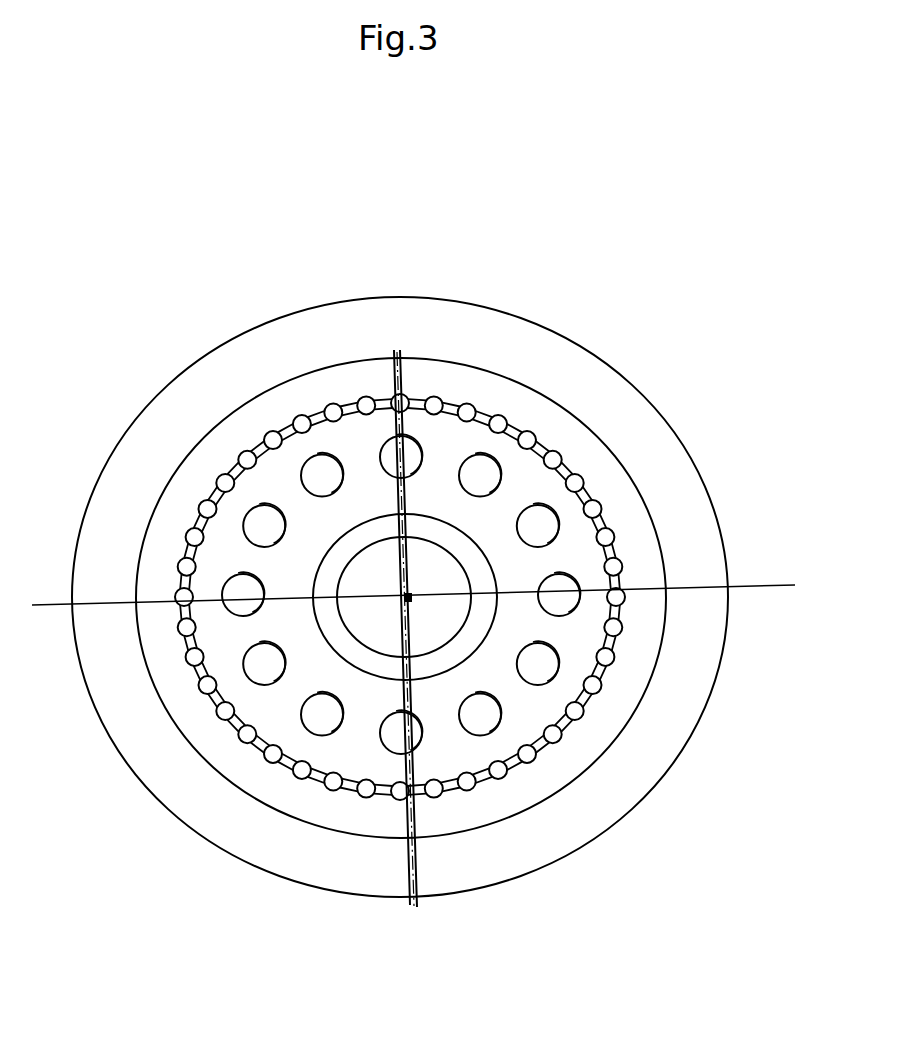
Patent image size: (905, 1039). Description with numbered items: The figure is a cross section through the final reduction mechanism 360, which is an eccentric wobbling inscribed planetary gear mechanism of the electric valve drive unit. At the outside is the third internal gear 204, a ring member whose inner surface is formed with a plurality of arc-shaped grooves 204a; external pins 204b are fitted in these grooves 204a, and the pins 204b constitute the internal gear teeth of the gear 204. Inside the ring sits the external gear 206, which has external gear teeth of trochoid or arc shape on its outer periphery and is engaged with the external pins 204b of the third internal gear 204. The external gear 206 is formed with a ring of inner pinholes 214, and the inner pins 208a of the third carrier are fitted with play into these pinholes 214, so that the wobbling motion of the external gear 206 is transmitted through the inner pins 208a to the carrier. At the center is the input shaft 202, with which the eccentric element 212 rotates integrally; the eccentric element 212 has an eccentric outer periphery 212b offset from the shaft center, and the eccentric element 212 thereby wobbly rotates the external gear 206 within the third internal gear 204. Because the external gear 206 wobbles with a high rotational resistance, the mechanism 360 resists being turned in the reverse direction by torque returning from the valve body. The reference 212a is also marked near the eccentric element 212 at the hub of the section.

The final reduction mechanism 360 is at (434, 282).
The third internal gear 204 is at (270, 412).
The arc-shaped grooves 204a is at (455, 403).
The external pins 204b is at (485, 420).
The inner pins 208a is at (512, 435).
The inner pinholes 214 is at (480, 470).
The external gear 206 is at (572, 548).
The eccentric element 212 is at (470, 640).
The hub bore 212a is at (413, 652).
The eccentric outer periphery 212b is at (500, 609).
The input shaft 202 is at (370, 625).